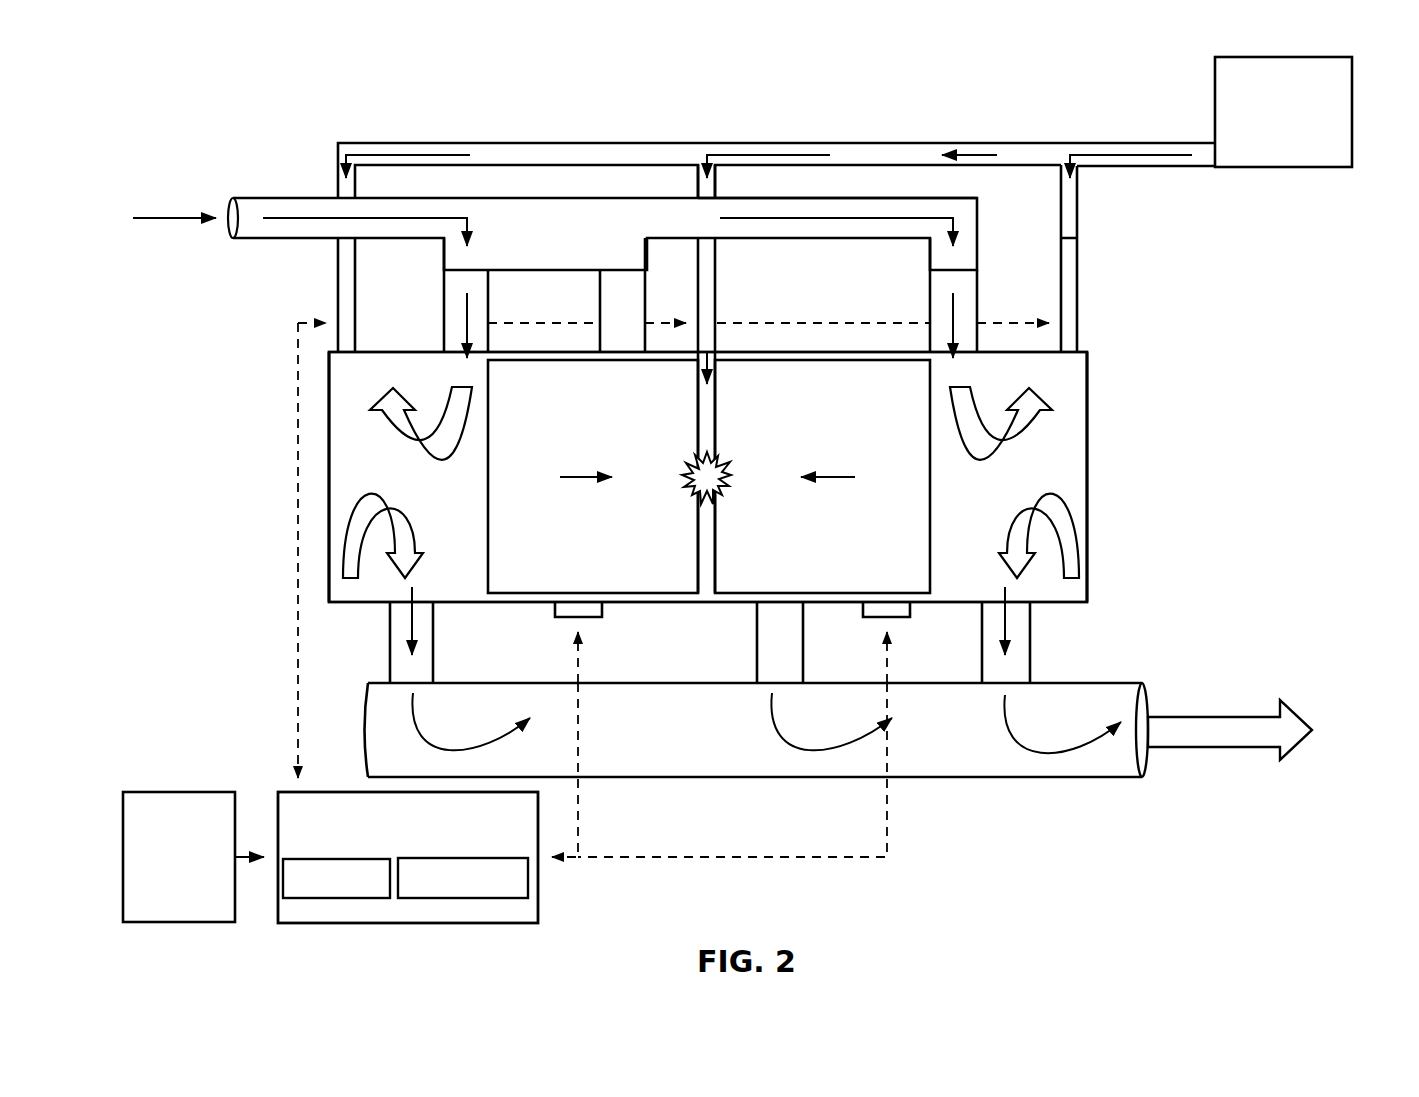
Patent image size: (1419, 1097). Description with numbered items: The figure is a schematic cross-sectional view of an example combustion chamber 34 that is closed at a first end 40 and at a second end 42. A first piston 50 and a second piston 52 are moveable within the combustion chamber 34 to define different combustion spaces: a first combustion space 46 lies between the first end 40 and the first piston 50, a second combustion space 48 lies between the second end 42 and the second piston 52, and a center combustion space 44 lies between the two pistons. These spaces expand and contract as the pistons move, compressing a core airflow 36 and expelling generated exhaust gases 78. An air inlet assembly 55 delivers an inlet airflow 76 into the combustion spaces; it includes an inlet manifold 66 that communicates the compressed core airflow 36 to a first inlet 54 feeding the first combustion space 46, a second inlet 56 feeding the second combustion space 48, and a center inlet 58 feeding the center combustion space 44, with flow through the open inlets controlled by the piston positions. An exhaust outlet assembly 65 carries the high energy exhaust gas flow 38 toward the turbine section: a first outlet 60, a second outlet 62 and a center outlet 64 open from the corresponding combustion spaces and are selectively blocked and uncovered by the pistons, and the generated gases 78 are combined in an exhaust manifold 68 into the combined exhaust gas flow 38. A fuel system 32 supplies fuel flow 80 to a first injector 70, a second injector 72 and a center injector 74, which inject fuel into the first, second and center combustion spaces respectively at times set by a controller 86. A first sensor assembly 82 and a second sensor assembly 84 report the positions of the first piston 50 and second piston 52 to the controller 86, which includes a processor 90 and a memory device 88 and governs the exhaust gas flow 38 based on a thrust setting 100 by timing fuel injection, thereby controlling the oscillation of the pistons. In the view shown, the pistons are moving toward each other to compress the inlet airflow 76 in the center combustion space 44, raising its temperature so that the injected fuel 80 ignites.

The fuel system 32 is at (1352, 110).
The combustion chamber 34 is at (1130, 343).
The core airflow 36 is at (178, 217).
The exhaust gas flow 38 is at (1237, 738).
The first end 40 is at (317, 518).
The second end 42 is at (1100, 416).
The center combustion space 44 is at (707, 590).
The first combustion space 46 is at (458, 520).
The second combustion space 48 is at (958, 520).
The first piston 50 is at (593, 476).
The second piston 52 is at (822, 476).
The first inlet 54 is at (490, 293).
The air inlet assembly 55 is at (184, 158).
The second inlet 56 is at (977, 272).
The center inlet 58 is at (600, 318).
The first outlet 60 is at (433, 663).
The second outlet 62 is at (1030, 652).
The center outlet 64 is at (803, 667).
The exhaust outlet assembly 65 is at (1013, 810).
The inlet manifold 66 is at (862, 195).
The exhaust manifold 68 is at (922, 777).
The first injector 70 is at (338, 265).
The second injector 72 is at (1077, 265).
The center injector 74 is at (717, 272).
The inlet airflow 76 is at (397, 428).
The exhaust gases 78 is at (352, 545).
The fuel flow 80 is at (787, 153).
The first sensor assembly 82 is at (600, 617).
The second sensor assembly 84 is at (908, 617).
The controller 86 is at (313, 925).
The memory device 88 is at (360, 898).
The processor 90 is at (460, 898).
The thrust setting 100 is at (178, 922).